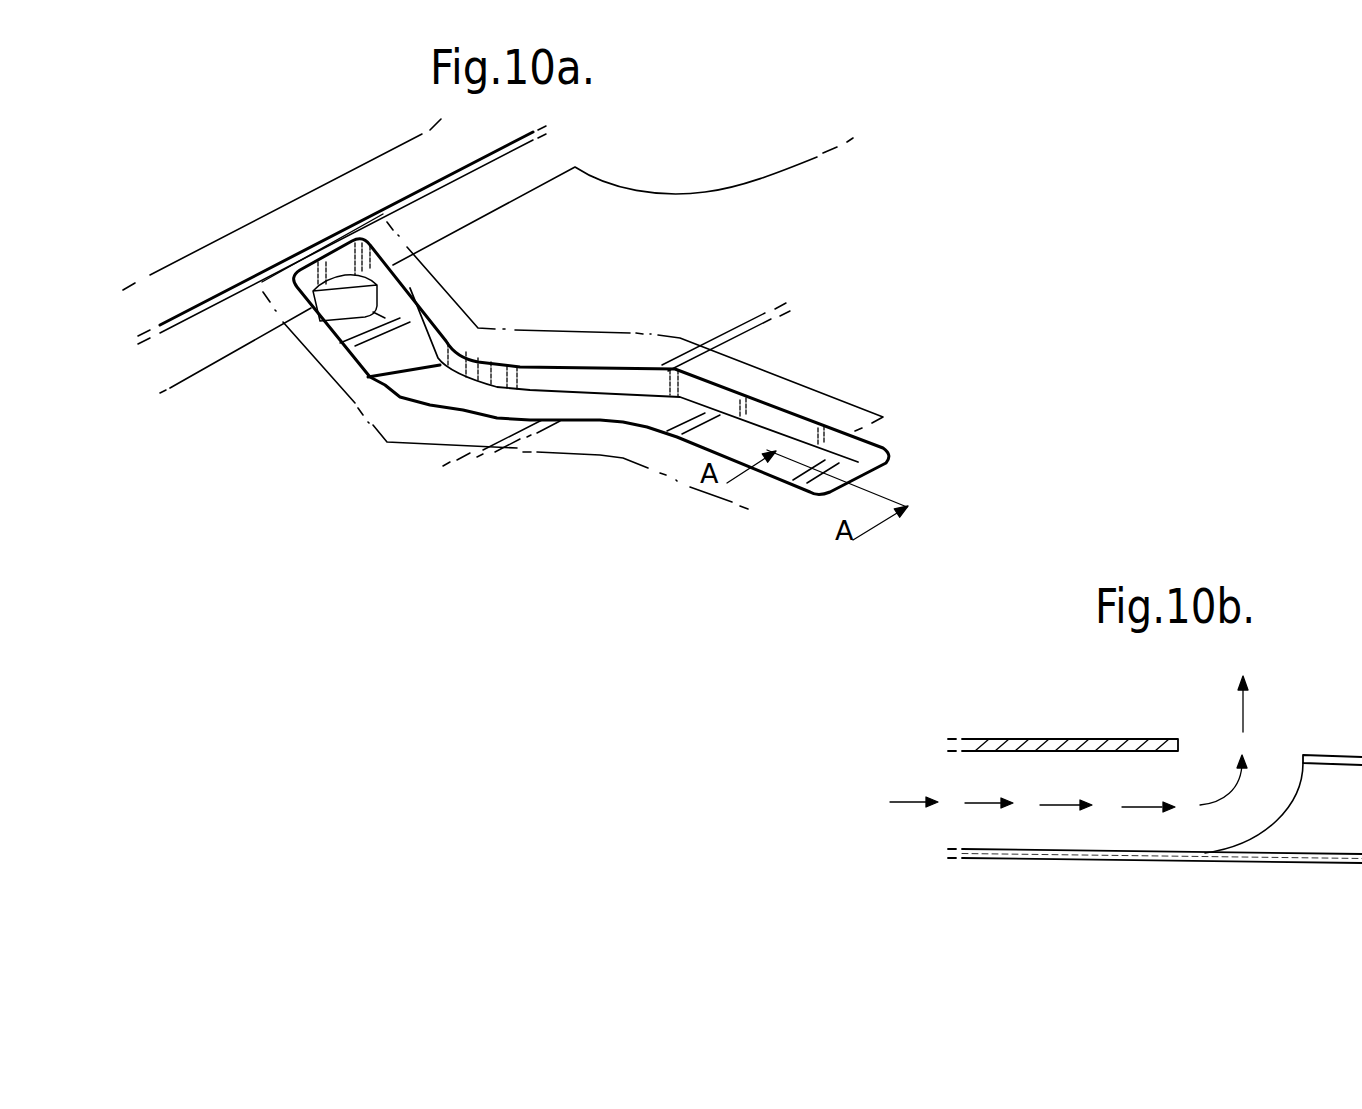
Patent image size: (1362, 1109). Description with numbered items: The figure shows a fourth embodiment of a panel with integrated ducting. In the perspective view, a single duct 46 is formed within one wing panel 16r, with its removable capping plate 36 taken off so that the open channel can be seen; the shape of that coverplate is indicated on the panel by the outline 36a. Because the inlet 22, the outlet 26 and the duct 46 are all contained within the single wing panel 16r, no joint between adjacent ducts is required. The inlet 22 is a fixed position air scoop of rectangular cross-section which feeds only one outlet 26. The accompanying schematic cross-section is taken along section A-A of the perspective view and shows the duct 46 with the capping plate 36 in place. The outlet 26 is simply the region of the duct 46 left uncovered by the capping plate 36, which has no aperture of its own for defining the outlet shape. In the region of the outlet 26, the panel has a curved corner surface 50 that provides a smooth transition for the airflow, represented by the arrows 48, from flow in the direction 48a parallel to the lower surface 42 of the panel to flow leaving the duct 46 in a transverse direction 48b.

In FIG. 10A, the wing panel 16r is at (207, 333).
In FIG. 10A, the inlet 22 is at (343, 300).
In FIG. 10A, the outline 36a is at (577, 330).
In FIG. 10B, the capping plate 36 is at (1097, 743).
In FIG. 10B, the lower surface 42 is at (1097, 858).
In FIG. 10B, the outlet 26 is at (1277, 743).
In FIG. 10B, the curved corner surface 50 is at (1281, 824).
In FIG. 10B, the airflow 48 is at (1225, 792).
In FIG. 10B, the flow direction parallel to lower surface 48a is at (910, 804).
In FIG. 10B, the transverse flow direction 48b is at (1245, 705).
In FIG. 10B, the duct 46 is at (1007, 770).